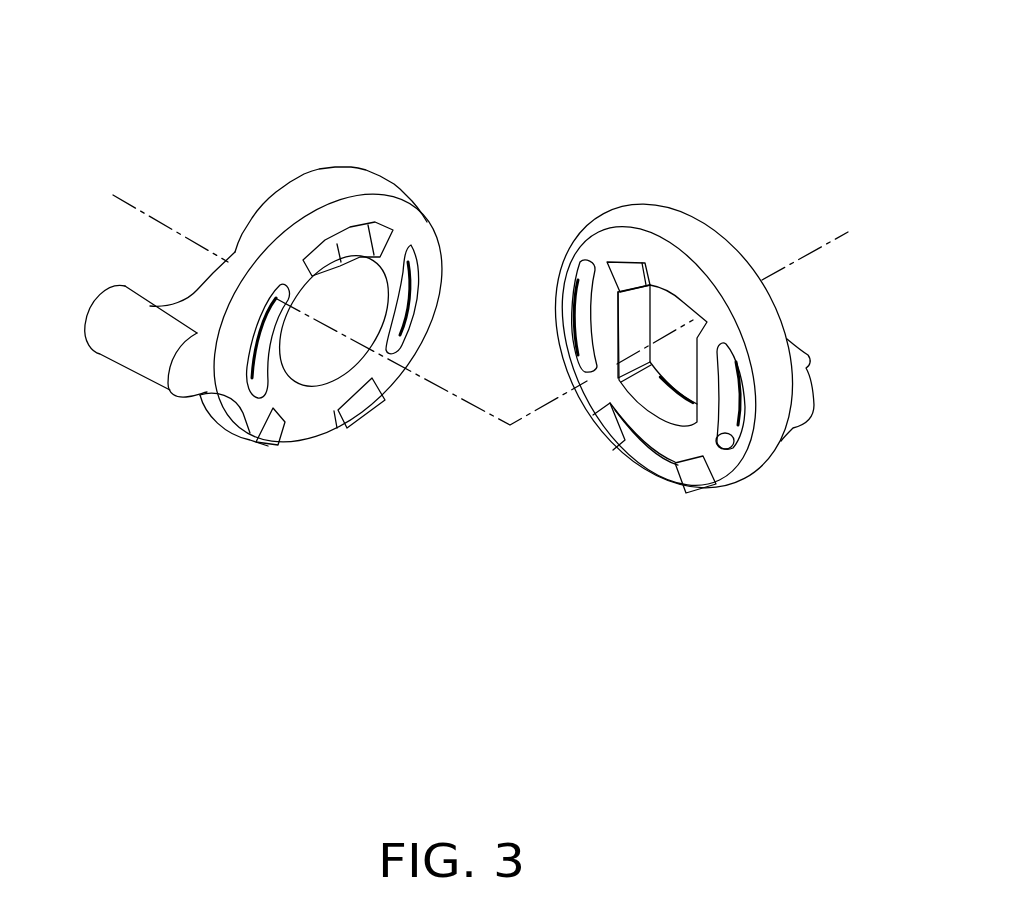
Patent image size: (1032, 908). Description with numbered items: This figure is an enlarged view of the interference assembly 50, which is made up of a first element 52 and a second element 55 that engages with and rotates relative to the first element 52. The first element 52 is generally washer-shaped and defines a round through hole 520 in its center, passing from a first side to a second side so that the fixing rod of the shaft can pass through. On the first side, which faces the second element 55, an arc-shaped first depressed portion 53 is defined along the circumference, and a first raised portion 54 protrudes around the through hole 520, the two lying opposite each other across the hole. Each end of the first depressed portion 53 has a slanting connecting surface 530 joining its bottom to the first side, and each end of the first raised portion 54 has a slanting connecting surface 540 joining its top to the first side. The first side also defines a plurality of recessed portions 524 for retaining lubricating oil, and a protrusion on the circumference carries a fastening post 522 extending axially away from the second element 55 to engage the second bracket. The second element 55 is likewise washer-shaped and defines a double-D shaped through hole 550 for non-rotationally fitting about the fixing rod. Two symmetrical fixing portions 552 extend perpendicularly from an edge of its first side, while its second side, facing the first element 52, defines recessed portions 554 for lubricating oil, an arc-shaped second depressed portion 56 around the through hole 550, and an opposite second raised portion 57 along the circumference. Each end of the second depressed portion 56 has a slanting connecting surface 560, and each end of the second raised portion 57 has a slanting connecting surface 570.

The interference assembly 50 is at (475, 45).
The first element 52 is at (253, 243).
The fastening post 522 is at (98, 332).
The through hole 520 is at (297, 333).
The recessed portions 524 is at (413, 263).
The first raised portion 54 is at (357, 243).
The slanting connecting surface 540 is at (320, 260).
The first depressed portion 53 is at (296, 432).
The slanting connecting surface 530 is at (360, 407).
The second element 55 is at (707, 247).
The fixing portions 552 is at (807, 378).
The through hole 550 is at (693, 375).
The second depressed portion 56 is at (660, 282).
The slanting connecting surface 560 is at (623, 272).
The slanting connecting surface 570 is at (610, 430).
The recessed portions 554 is at (728, 420).
The second raised portion 57 is at (666, 477).